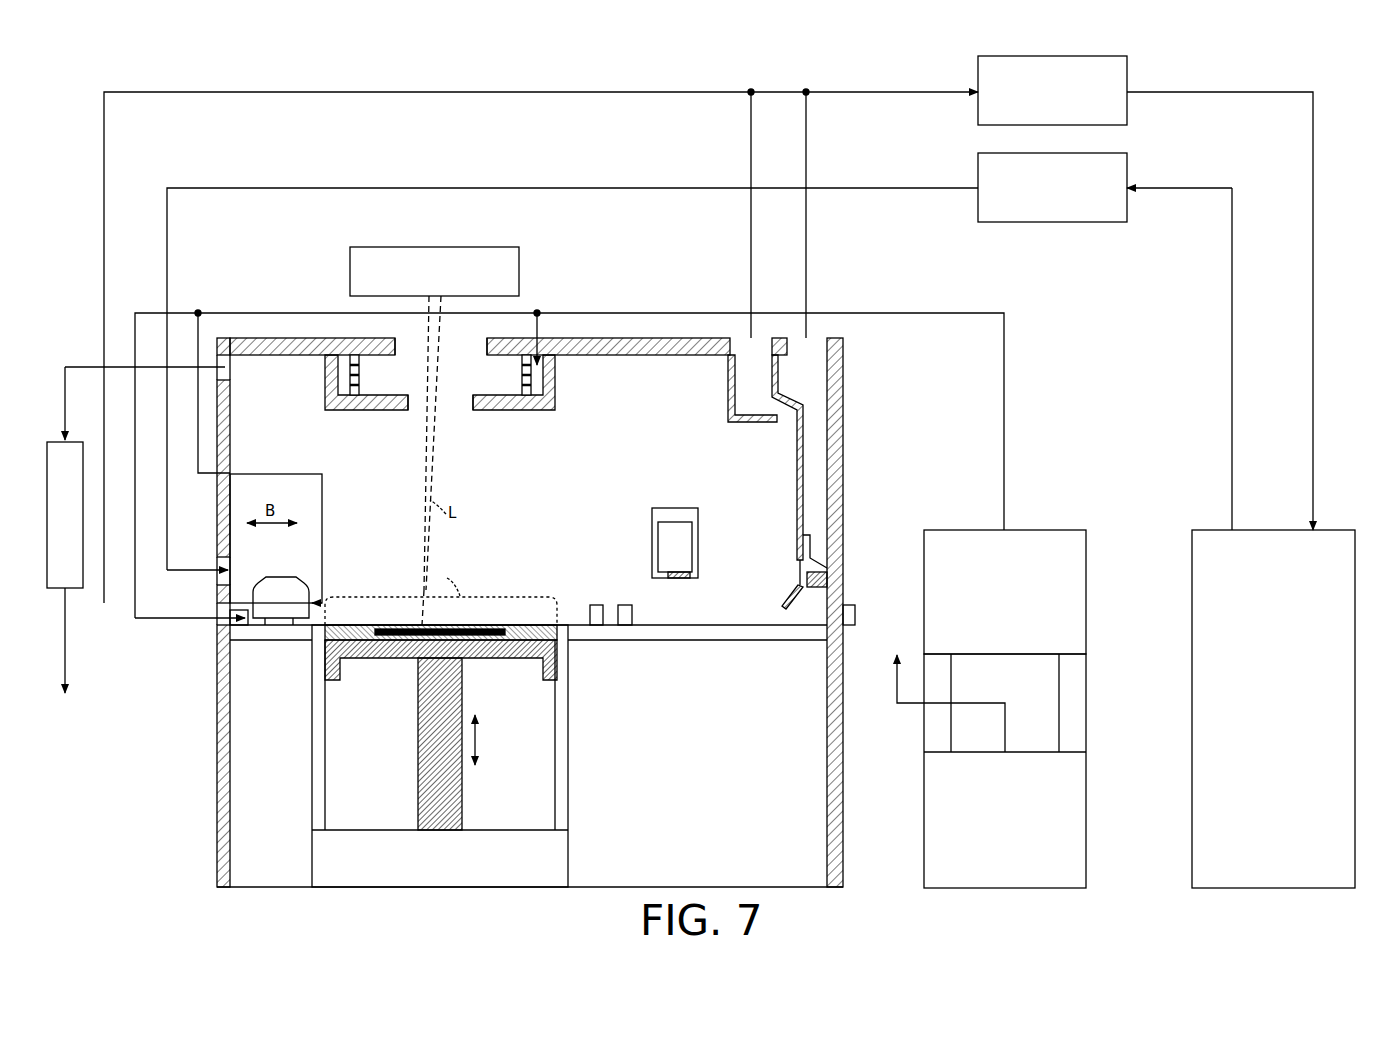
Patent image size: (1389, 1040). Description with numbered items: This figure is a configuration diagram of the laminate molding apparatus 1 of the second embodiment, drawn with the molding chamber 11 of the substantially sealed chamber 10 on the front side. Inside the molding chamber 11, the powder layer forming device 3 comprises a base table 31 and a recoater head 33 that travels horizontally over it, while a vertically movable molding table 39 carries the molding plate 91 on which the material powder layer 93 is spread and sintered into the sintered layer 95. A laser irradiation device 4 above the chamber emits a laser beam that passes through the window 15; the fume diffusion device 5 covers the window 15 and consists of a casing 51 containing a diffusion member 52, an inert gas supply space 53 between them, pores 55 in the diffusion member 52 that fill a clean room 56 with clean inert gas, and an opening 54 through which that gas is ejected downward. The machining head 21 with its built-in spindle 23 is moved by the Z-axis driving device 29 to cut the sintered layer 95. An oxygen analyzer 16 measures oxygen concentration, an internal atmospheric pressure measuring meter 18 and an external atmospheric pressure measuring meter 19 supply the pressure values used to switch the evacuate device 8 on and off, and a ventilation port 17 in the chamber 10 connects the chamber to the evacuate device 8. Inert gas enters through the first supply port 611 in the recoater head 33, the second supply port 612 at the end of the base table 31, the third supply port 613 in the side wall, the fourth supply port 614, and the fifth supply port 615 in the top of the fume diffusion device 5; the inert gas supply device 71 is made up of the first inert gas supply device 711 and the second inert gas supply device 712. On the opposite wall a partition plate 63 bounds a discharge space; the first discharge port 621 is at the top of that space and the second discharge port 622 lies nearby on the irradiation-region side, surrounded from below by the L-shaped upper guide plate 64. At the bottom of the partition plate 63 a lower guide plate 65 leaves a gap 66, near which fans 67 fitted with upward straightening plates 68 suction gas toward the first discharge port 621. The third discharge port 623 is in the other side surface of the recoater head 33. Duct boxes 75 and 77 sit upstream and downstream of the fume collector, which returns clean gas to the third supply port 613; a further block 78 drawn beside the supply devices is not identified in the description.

The laminate molding apparatus 1 is at (192, 173).
The powder layer forming device 3 is at (440, 710).
The laser irradiation device 4 is at (487, 262).
The fume diffusion device 5 is at (453, 420).
The evacuate device 8 is at (48, 460).
The chamber 10 is at (845, 440).
The molding chamber 11 is at (646, 460).
The window 15 is at (406, 344).
The oxygen analyzer 16 is at (596, 604).
The ventilation port 17 is at (233, 378).
The internal atmospheric pressure measuring meter 18 is at (625, 604).
The external atmospheric pressure measuring meter 19 is at (856, 608).
The machining head 21 is at (694, 525).
The spindle 23 is at (680, 578).
The Z-axis driving device 29 is at (660, 512).
The base table 31 is at (302, 645).
The recoater head 33 is at (286, 600).
The molding table 39 is at (357, 662).
The casing 51 is at (372, 410).
The diffusion member 52 is at (520, 366).
The inert gas supply space 53 is at (540, 382).
The opening 54 is at (455, 402).
The pores 55 is at (360, 365).
The clean room 56 is at (452, 380).
The partition plate 63 is at (797, 490).
The upper guide plate 64 is at (727, 394).
The lower guide plate 65 is at (783, 604).
The gap 66 is at (788, 575).
The fans 67 is at (815, 588).
The straightening plates 68 is at (808, 552).
The inert gas supply device 71 is at (981, 655).
The duct box 75 is at (1118, 108).
The duct box 77 is at (1110, 212).
The storage unit 78 is at (1340, 540).
The molding plate 91 is at (480, 660).
The material powder layer 93 is at (465, 628).
The sintered layer 95 is at (400, 628).
The first supply port 611 is at (316, 598).
The second supply port 612 is at (238, 628).
The third supply port 613 is at (218, 562).
The fourth supply port 614 is at (943, 693).
The fifth supply port 615 is at (534, 340).
The first discharge port 621 is at (820, 338).
The second discharge port 622 is at (745, 338).
The third discharge port 623 is at (258, 588).
The first inert gas supply device 711 is at (945, 536).
The second inert gas supply device 712 is at (930, 800).